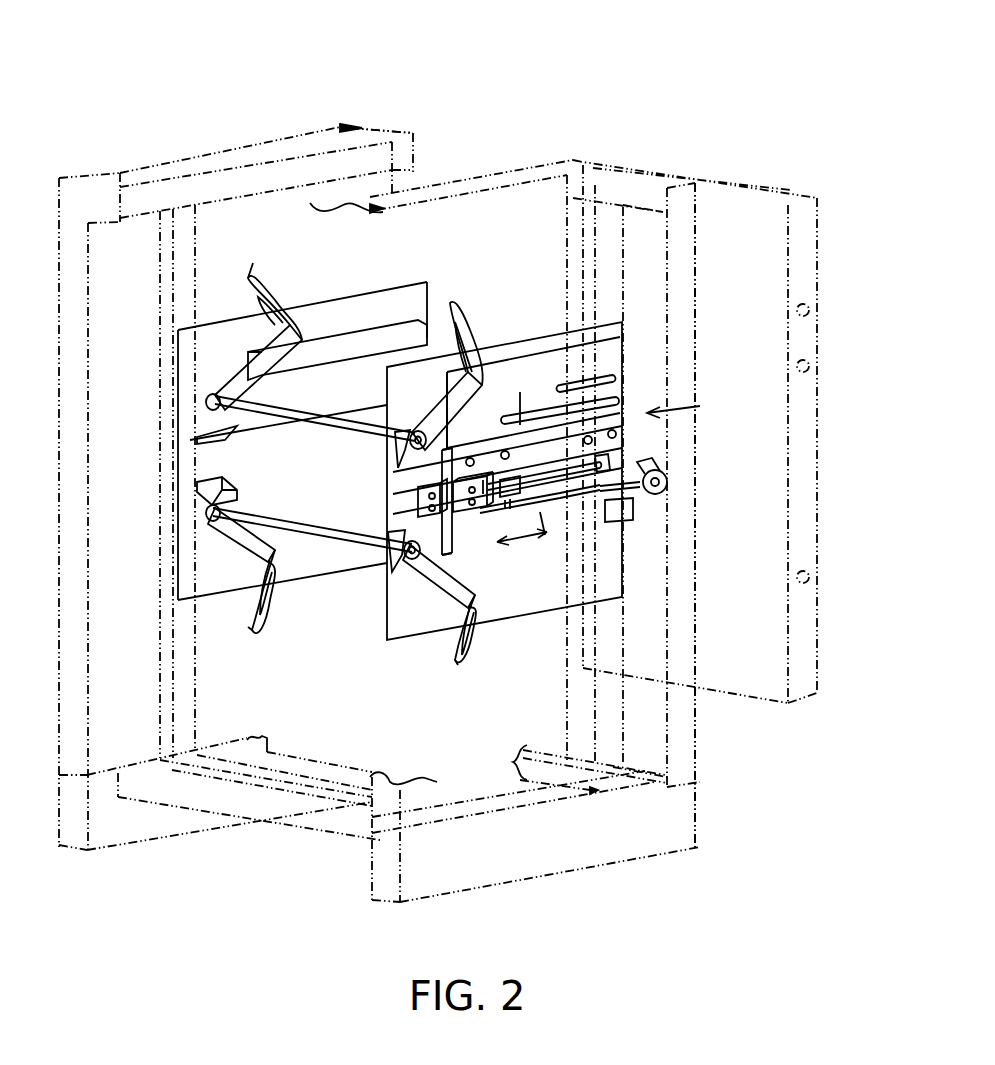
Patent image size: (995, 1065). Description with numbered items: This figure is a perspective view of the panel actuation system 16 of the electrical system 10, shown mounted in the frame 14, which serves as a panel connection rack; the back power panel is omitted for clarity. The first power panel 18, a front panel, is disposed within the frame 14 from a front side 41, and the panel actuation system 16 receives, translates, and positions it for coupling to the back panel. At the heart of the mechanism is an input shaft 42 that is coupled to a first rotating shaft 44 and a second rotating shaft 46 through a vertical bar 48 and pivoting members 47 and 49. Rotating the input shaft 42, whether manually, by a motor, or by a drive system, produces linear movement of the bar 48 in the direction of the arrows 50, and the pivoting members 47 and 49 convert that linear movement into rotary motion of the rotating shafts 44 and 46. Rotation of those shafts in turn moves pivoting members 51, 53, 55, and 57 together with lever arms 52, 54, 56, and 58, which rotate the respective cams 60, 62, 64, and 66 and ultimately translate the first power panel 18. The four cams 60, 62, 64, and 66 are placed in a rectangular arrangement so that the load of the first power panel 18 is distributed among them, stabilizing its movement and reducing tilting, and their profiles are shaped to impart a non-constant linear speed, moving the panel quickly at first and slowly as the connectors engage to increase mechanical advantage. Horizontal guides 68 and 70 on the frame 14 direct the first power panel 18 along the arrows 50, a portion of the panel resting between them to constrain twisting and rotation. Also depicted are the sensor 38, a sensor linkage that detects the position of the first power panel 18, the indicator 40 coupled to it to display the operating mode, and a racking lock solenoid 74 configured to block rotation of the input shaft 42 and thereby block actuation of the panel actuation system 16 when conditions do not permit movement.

The electrical system 10 is at (515, 55).
The frame 14 is at (380, 127).
The panel actuation system 16 is at (550, 90).
The first power panel 18 is at (812, 700).
The sensor 38 is at (547, 448).
The indicator 40 is at (667, 497).
The front side 41 is at (708, 262).
The input shaft 42 is at (545, 446).
The first rotating shaft 44 is at (295, 422).
The second rotating shaft 46 is at (322, 540).
The pivoting member 47 is at (418, 495).
The bar 48 is at (445, 530).
The pivoting member 49 is at (460, 432).
The arrows 50 is at (553, 508).
The pivoting member 51 is at (217, 393).
The lever arm 52 is at (240, 357).
The pivoting member 53 is at (423, 410).
The lever arm 54 is at (383, 400).
The pivoting member 55 is at (213, 518).
The lever arm 56 is at (238, 565).
The pivoting member 57 is at (405, 567).
The lever arm 58 is at (428, 590).
The cam 60 is at (260, 280).
The cam 62 is at (473, 327).
The cam 64 is at (260, 620).
The cam 66 is at (467, 663).
The guide 68 is at (345, 383).
The guide 70 is at (412, 372).
The racking lock solenoid 74 is at (575, 512).